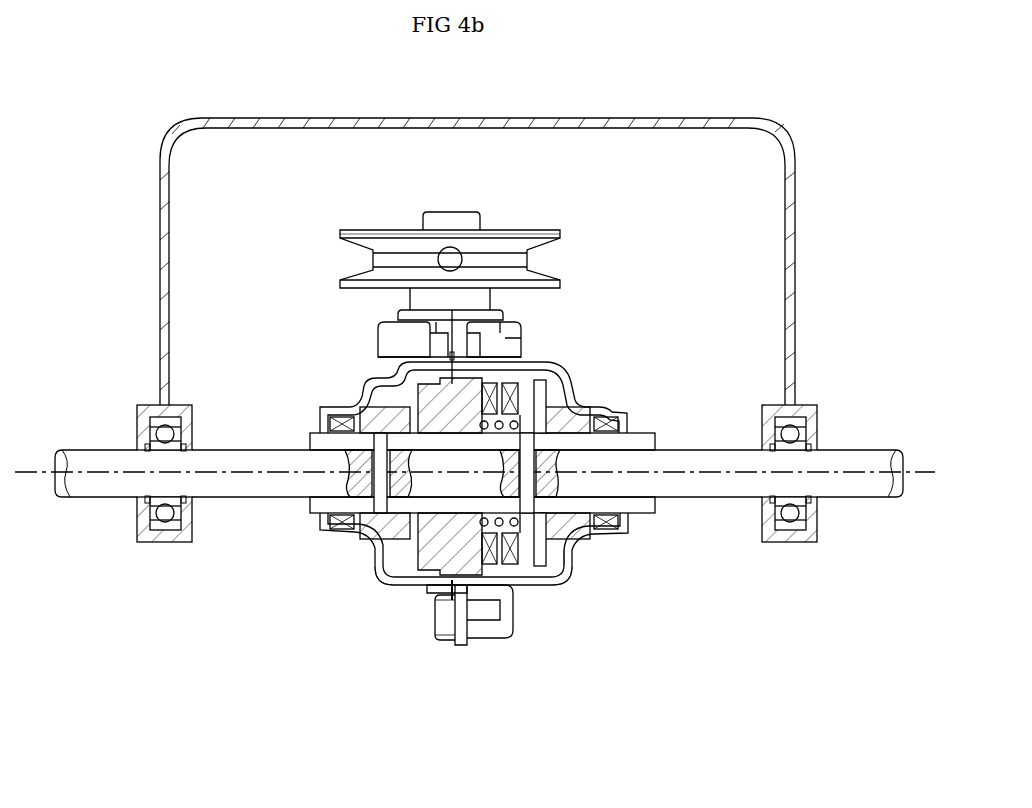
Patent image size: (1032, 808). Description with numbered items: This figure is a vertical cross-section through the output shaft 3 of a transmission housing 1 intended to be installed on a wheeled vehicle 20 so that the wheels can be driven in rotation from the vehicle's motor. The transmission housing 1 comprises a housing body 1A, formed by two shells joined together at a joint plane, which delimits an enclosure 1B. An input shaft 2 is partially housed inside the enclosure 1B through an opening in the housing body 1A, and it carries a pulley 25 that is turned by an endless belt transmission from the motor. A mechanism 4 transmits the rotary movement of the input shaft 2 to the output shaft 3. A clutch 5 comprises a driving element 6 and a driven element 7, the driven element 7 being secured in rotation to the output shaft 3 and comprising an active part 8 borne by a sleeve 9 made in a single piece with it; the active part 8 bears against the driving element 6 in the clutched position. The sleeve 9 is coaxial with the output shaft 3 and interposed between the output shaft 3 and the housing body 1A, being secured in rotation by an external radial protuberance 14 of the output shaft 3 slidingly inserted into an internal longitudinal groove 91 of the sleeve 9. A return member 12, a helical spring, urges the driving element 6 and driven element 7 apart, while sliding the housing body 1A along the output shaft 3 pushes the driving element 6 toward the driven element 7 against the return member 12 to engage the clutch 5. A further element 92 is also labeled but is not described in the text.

The transmission housing 1 is at (380, 576).
The housing body 1A is at (574, 573).
The enclosure 1B is at (557, 550).
The input shaft 2 is at (466, 207).
The output shaft 3 is at (275, 488).
The mechanism for transmitting movement 4 is at (497, 380).
The clutch 5 is at (500, 568).
The driving element 6 is at (439, 545).
The driven element 7 is at (523, 548).
The active part of the clutch 8 is at (508, 568).
The sleeve 9 is at (463, 516).
The return member 12 is at (502, 420).
The external radial protuberance 14 is at (382, 462).
The wheeled vehicle 20 is at (150, 281).
The pulley 25 is at (358, 226).
The internal longitudinal groove 91 is at (637, 443).
The hub pin 92 is at (524, 442).